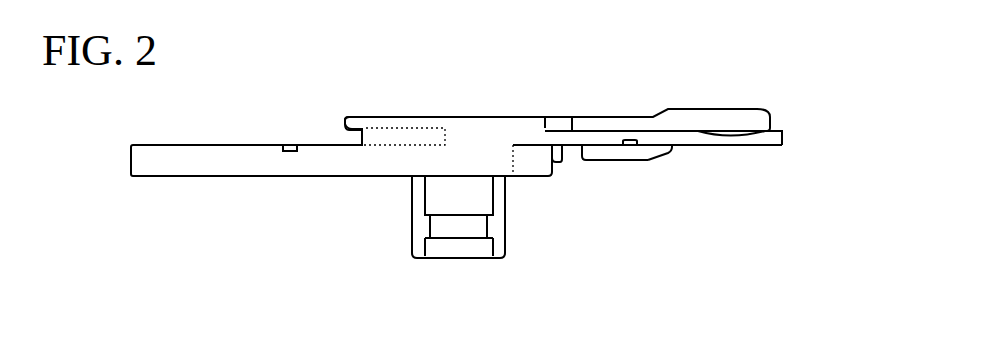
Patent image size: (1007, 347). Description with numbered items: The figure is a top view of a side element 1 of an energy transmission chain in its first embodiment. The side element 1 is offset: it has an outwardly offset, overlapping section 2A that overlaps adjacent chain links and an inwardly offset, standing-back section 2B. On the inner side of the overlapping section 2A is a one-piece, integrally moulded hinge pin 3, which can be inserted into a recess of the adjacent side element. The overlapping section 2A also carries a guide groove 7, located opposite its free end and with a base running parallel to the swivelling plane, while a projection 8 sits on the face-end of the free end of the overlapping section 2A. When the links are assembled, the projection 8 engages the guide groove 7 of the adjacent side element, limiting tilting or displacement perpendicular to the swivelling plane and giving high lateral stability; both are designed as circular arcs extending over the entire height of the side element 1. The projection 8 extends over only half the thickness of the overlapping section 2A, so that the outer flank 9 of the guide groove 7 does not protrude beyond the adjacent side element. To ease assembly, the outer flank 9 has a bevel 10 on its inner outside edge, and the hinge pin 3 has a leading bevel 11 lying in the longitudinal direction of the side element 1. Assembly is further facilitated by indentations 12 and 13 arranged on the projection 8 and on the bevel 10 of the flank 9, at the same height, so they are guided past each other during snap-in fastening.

The side element 1 is at (485, 152).
The outwardly offset section 2A is at (615, 122).
The inwardly offset section 2B is at (230, 163).
The hinge pin 3 is at (598, 153).
The guide groove 7 is at (348, 135).
The projection 8 is at (775, 140).
The outer flank 9 is at (348, 113).
The bevel 10 is at (343, 127).
The leading bevel 11 is at (664, 186).
The indentation 12 is at (742, 133).
The indentation 13 is at (368, 127).